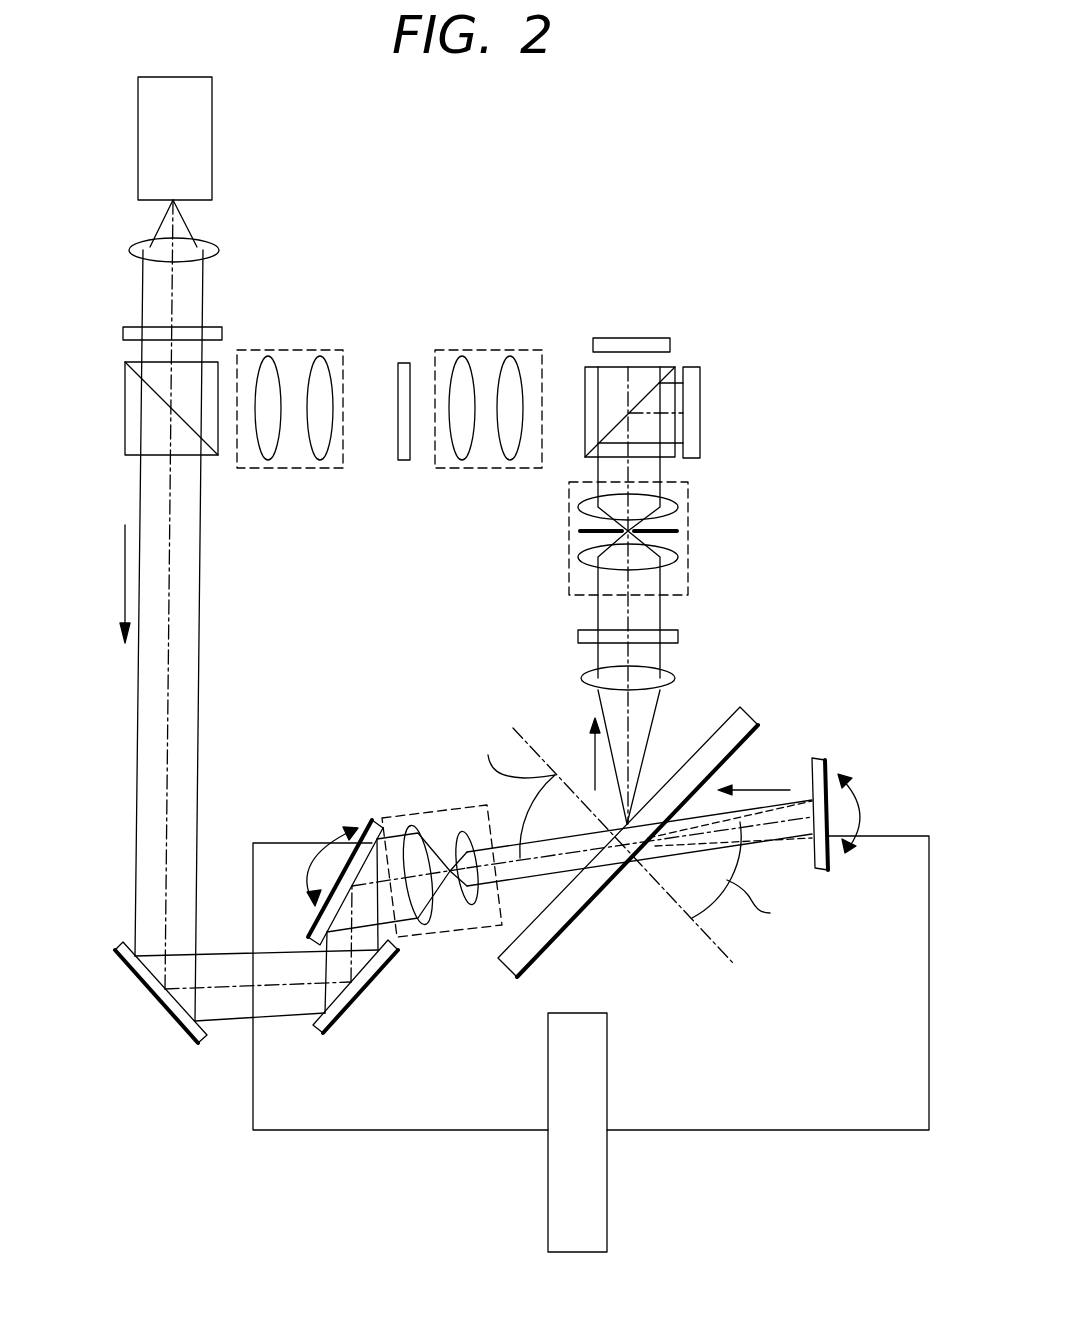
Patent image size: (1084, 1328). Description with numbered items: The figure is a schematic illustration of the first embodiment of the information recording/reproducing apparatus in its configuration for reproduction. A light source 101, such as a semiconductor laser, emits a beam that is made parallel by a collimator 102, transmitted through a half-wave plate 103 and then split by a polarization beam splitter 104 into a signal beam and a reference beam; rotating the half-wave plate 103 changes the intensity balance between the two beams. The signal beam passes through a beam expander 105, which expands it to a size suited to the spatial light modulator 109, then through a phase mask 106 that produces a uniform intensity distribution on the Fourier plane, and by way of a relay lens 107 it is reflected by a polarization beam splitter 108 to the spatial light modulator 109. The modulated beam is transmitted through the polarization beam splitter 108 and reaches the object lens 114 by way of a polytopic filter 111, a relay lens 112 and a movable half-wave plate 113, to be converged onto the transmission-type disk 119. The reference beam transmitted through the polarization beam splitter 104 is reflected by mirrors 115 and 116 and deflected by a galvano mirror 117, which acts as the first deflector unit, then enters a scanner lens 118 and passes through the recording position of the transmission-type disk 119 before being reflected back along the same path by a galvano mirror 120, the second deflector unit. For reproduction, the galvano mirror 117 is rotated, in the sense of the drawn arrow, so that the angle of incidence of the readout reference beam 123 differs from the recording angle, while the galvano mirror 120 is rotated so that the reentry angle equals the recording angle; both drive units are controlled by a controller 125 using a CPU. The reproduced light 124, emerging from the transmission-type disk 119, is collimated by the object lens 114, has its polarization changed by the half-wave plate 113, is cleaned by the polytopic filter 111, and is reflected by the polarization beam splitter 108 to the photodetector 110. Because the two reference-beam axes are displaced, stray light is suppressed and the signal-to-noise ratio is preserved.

The light source 101 is at (137, 109).
The collimator 102 is at (133, 250).
The half-wave plate 103 is at (122, 334).
The polarization beam splitter 104 is at (124, 400).
The beam expander 105 is at (304, 349).
The phase mask 106 is at (404, 460).
The relay lens 107 is at (474, 349).
The polarization beam splitter 108 is at (590, 367).
The spatial light modulator 109 is at (648, 338).
The photodetector 110 is at (701, 377).
The polytopic filter 111 is at (680, 528).
The relay lens 112 is at (690, 563).
The movable half-wave plate 113 is at (680, 636).
The object lens 114 is at (677, 678).
The mirror 115 is at (145, 977).
The mirror 116 is at (340, 1008).
The galvano mirror 117 is at (370, 820).
The scanner lens 118 is at (445, 805).
The transmission-type disk 119 is at (580, 920).
The galvano mirror 120 is at (823, 760).
The readout reference beam 123 is at (123, 572).
The reproduced light 124 is at (595, 755).
The controller 125 is at (607, 1216).